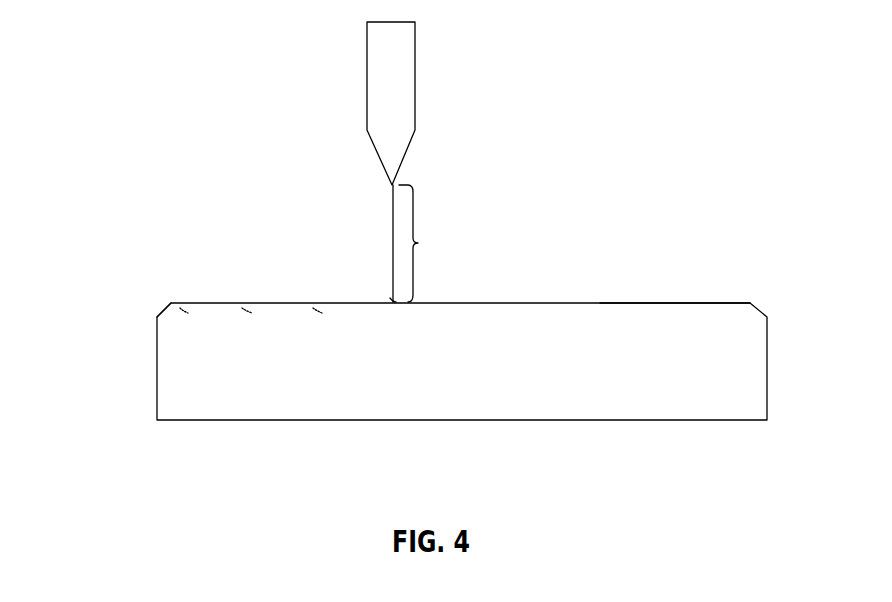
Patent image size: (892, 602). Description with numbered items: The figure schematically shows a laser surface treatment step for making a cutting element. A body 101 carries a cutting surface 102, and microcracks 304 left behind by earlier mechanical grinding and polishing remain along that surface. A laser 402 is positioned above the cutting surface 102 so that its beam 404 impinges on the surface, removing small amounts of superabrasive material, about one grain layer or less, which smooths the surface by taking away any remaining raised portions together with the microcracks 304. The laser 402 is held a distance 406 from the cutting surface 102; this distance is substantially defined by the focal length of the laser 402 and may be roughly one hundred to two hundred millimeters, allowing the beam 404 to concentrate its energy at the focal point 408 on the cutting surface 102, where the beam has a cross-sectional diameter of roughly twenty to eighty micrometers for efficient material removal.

The substrate 101 is at (205, 373).
The cutting surface 102 is at (655, 302).
The microcracks 304 is at (190, 315).
The laser 402 is at (373, 88).
The beam 404 is at (391, 232).
The distance 406 is at (418, 243).
The focal point 408 is at (392, 300).